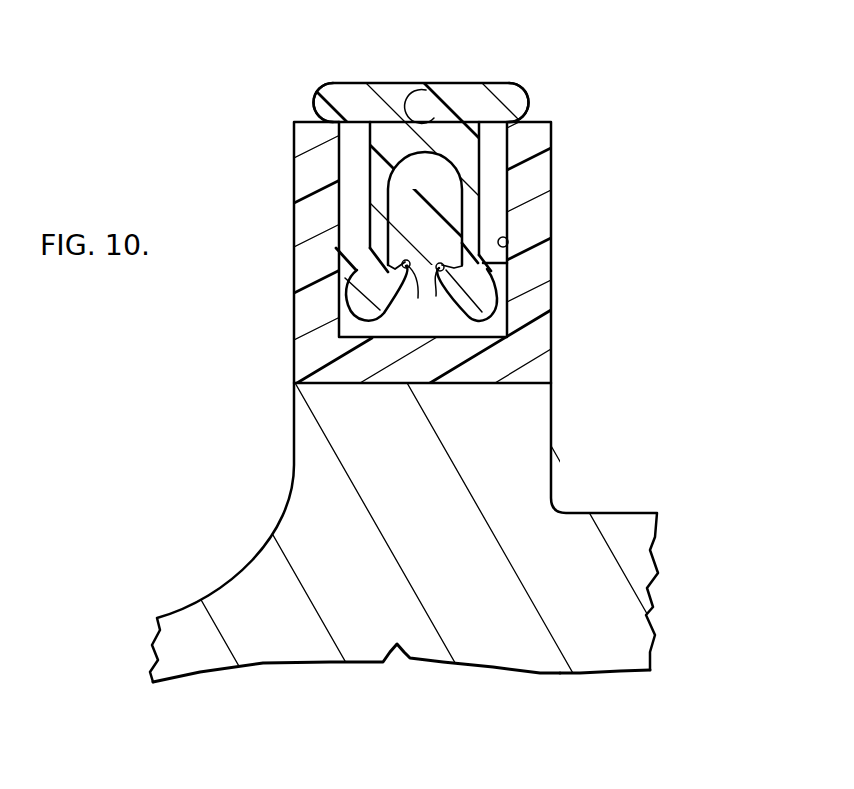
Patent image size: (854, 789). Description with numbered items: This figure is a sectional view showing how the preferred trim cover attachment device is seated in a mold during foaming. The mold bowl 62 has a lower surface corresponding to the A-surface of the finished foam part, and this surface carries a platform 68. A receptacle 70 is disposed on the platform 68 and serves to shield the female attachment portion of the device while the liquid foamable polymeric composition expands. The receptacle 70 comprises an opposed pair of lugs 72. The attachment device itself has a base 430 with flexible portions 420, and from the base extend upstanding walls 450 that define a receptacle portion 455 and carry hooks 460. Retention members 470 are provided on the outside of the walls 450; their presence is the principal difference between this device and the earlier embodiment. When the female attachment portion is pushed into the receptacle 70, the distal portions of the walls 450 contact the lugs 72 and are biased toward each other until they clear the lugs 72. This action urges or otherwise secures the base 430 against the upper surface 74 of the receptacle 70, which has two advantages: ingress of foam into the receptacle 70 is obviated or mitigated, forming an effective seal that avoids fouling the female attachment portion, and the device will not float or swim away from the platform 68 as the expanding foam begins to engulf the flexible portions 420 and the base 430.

The bowl 62 is at (640, 555).
The platform 68 is at (305, 448).
The receptacle 70 is at (303, 143).
The lug 72 is at (355, 262).
The upper surface of receptacle 74 is at (312, 112).
The flexible portion 420 is at (430, 83).
The base 430 is at (517, 83).
The upstanding wall 450 is at (380, 212).
The receptacle portion 455 is at (447, 223).
The hook 460 is at (423, 229).
The retention member 470 is at (350, 288).